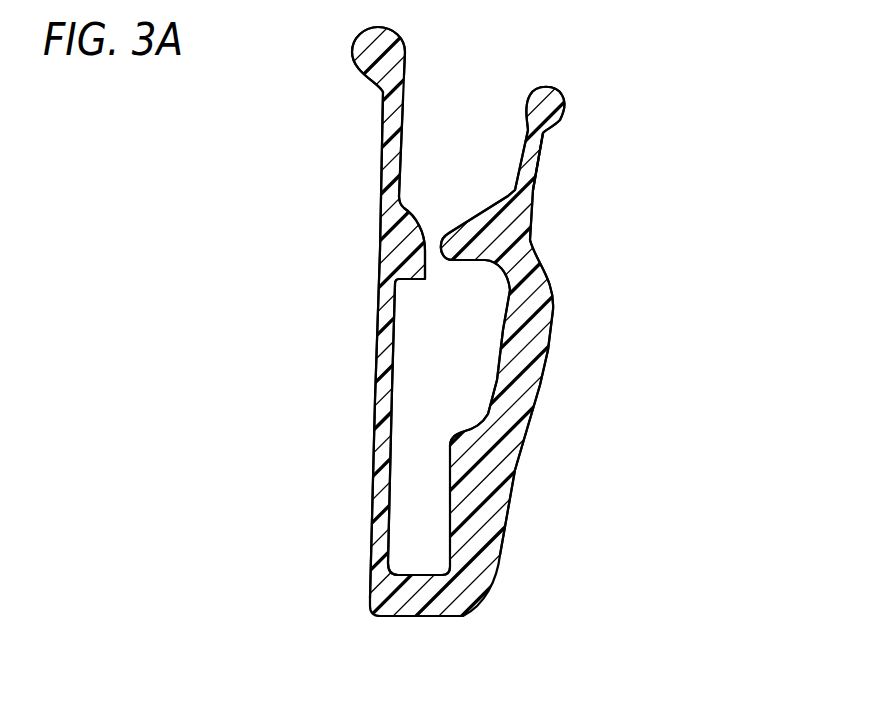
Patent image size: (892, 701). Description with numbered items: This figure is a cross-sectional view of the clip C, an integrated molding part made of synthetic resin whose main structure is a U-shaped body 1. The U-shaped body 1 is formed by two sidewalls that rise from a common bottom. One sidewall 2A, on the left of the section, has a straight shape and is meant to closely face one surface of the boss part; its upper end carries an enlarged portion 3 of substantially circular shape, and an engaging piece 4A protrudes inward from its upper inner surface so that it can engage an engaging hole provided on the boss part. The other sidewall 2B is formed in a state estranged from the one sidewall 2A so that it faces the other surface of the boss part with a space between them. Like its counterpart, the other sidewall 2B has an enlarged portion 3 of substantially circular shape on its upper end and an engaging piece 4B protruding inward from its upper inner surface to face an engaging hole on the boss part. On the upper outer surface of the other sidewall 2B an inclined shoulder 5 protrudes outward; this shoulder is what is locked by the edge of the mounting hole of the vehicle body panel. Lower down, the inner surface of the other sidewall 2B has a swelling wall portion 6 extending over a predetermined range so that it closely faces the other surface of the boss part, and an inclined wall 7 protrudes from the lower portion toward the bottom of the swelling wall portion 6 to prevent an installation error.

The U-shaped body 1 is at (318, 334).
The one sidewall 2A is at (375, 447).
The other sidewall 2B is at (527, 350).
The enlarged portion 3 is at (362, 50).
The engaging piece 4A is at (408, 258).
The engaging piece 4B is at (480, 237).
The inclined shoulder 5 is at (547, 275).
The swelling wall portion 6 is at (468, 443).
The inclined wall 7 is at (438, 552).
The clip C is at (612, 165).